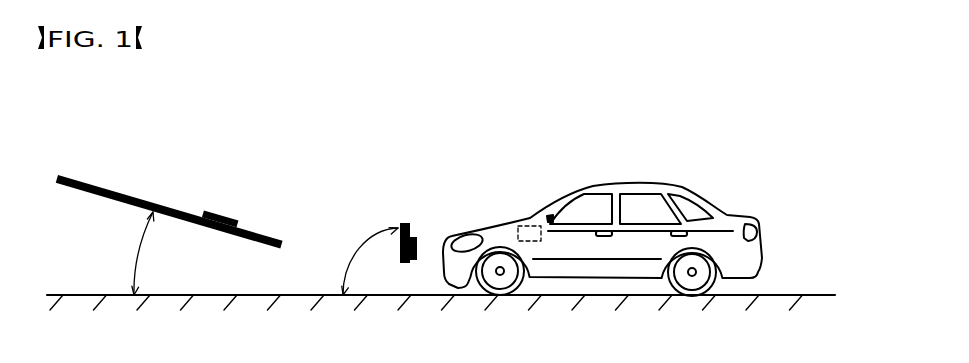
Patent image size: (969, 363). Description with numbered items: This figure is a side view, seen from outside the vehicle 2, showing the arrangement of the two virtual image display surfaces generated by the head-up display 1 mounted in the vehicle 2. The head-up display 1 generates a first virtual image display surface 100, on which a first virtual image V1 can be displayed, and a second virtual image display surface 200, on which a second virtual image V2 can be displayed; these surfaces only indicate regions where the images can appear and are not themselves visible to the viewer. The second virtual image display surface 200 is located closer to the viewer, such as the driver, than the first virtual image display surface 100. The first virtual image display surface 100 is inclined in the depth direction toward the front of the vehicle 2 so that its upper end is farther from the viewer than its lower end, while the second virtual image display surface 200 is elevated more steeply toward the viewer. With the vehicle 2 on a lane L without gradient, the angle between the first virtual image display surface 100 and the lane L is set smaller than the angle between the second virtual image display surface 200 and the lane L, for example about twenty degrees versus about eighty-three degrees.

The first virtual image display surface 100 is at (173, 208).
The first virtual image V1 is at (230, 215).
The second virtual image display surface 200 is at (405, 221).
The second virtual image V2 is at (412, 240).
The head-up display 1 is at (525, 225).
The vehicle 2 is at (655, 185).
The lane L is at (815, 295).